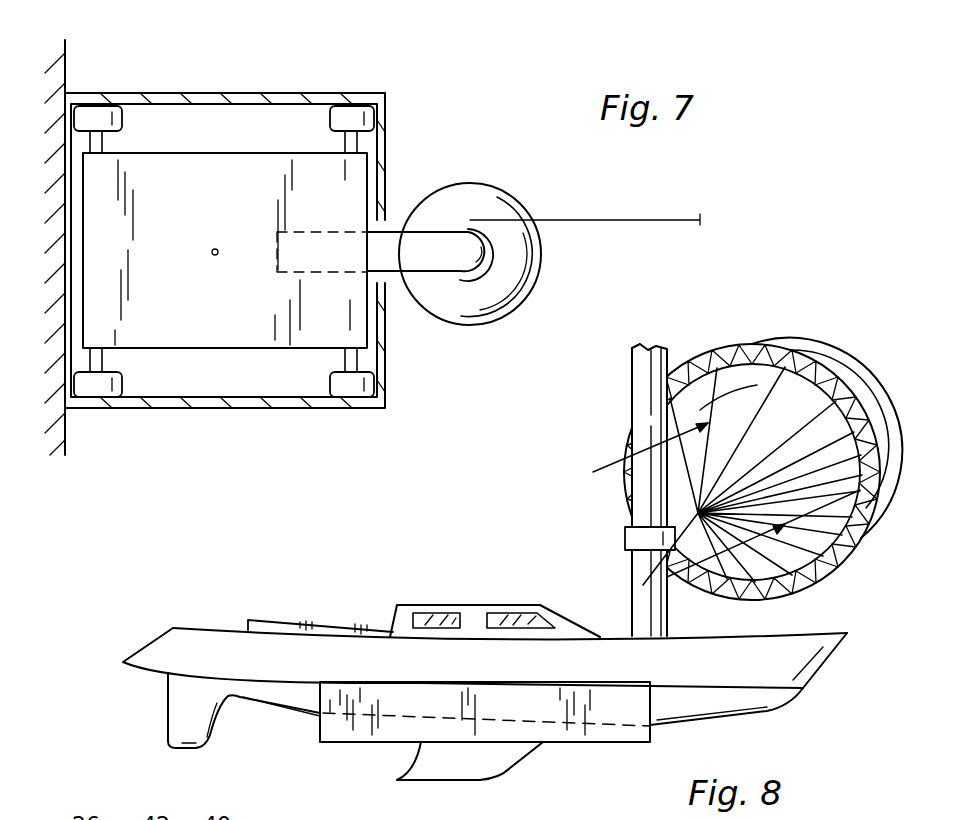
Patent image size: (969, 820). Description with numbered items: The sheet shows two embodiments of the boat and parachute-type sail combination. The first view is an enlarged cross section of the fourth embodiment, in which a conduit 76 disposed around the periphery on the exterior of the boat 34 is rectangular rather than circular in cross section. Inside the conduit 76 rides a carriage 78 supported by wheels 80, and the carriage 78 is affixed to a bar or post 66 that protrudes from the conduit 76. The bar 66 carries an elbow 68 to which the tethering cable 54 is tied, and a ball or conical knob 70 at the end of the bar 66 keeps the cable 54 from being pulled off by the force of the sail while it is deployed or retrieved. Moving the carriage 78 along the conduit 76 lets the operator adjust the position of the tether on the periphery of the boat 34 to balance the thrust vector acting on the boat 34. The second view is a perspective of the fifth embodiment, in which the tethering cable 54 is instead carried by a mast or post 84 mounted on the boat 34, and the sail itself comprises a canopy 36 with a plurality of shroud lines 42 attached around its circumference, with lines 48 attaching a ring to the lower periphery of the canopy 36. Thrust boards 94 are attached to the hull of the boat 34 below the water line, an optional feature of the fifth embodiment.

In FIG. 8, the boat 34 is at (214, 618).
In FIG. 8, the canopy 36 is at (838, 356).
In FIG. 8, the shroud lines 42 is at (758, 420).
In FIG. 8, the lines 48 is at (720, 350).
In FIG. 7, the tethering cable 54 is at (606, 218).
In FIG. 8, the tethering cable 54 is at (630, 522).
In FIG. 7, the bar or post 66 is at (413, 258).
In FIG. 7, the elbow 68 is at (470, 231).
In FIG. 7, the ball or conical knob 70 is at (508, 210).
In FIG. 7, the conduit 76 is at (243, 93).
In FIG. 7, the carriage 78 is at (327, 195).
In FIG. 7, the wheels 80 is at (355, 110).
In FIG. 8, the mast or post 84 is at (640, 388).
In FIG. 8, the thrust boards 94 is at (615, 712).